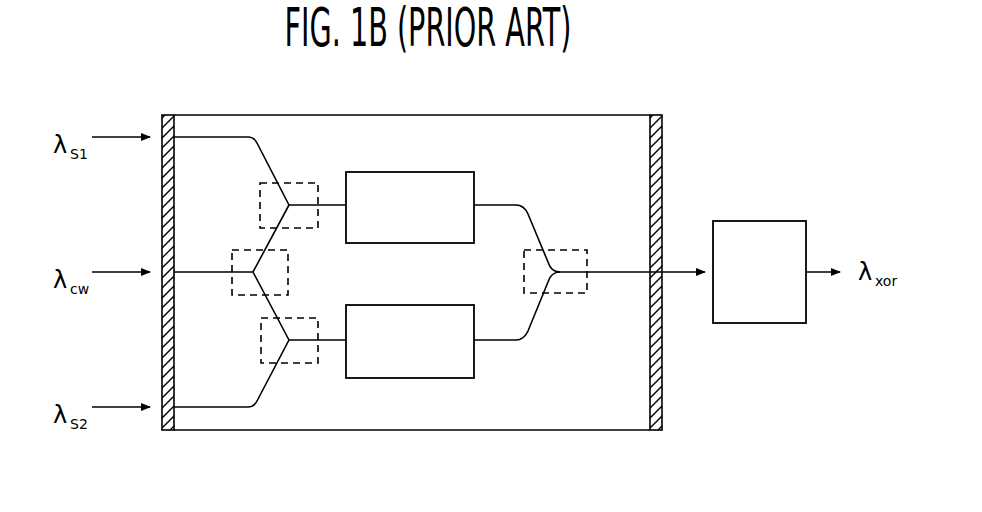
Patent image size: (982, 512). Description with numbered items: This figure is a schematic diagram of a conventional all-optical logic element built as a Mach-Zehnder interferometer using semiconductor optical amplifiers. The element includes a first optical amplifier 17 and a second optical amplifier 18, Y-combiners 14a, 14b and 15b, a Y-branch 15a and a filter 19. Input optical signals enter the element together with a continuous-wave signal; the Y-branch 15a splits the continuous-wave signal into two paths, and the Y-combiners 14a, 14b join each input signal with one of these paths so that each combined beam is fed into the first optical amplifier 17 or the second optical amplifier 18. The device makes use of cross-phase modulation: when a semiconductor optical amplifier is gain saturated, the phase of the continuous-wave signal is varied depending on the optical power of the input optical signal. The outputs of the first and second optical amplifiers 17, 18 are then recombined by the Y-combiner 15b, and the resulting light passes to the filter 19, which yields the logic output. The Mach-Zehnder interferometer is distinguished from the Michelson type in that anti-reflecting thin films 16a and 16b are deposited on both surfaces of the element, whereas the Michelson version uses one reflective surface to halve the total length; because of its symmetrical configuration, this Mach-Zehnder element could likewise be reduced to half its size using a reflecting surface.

The Y-combiner 14a is at (260, 210).
The Y-combiner 14b is at (261, 343).
The Y-branch 15a is at (288, 276).
The Y-combiner 15b is at (553, 250).
The anti-reflecting thin film 16a is at (173, 431).
The anti-reflecting thin film 16b is at (660, 431).
The first optical amplifier 17 is at (470, 181).
The second optical amplifier 18 is at (405, 305).
The filter 19 is at (741, 228).